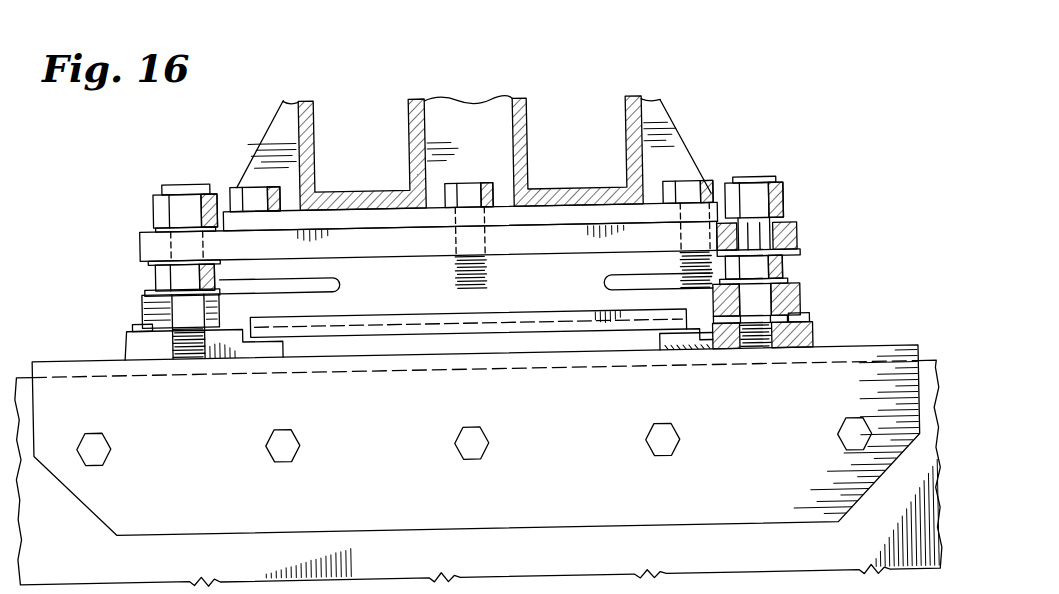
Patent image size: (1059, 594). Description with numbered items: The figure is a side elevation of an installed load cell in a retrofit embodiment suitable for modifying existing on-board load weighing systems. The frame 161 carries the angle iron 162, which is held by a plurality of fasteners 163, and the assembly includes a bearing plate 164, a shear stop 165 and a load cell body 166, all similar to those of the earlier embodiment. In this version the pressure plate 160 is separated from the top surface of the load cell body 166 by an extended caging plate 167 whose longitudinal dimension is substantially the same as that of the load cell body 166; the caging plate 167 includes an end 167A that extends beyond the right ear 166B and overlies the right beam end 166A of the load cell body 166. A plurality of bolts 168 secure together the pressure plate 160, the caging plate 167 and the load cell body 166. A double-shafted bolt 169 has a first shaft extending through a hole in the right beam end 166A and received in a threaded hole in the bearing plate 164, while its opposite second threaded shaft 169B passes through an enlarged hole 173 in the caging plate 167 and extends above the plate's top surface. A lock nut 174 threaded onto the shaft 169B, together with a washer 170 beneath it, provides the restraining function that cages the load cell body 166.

The pressure plate 160 is at (684, 122).
The frame 161 is at (930, 382).
The angle iron 162 is at (898, 368).
The fasteners 163 is at (277, 445).
The bearing plate 164 is at (804, 333).
The shear stop 165 is at (810, 316).
The load cell body 166 is at (563, 298).
The right beam end 166A is at (800, 300).
The right ear 166B is at (643, 266).
The caging plate 167 is at (528, 236).
The end of caging plate 167A is at (800, 243).
The bolts 168 is at (246, 187).
The double-shafted bolt 169 is at (783, 267).
The second threaded shaft 169B is at (798, 255).
The washer 170 is at (790, 283).
The enlarged hole 173 is at (797, 224).
The nut 174 is at (778, 190).